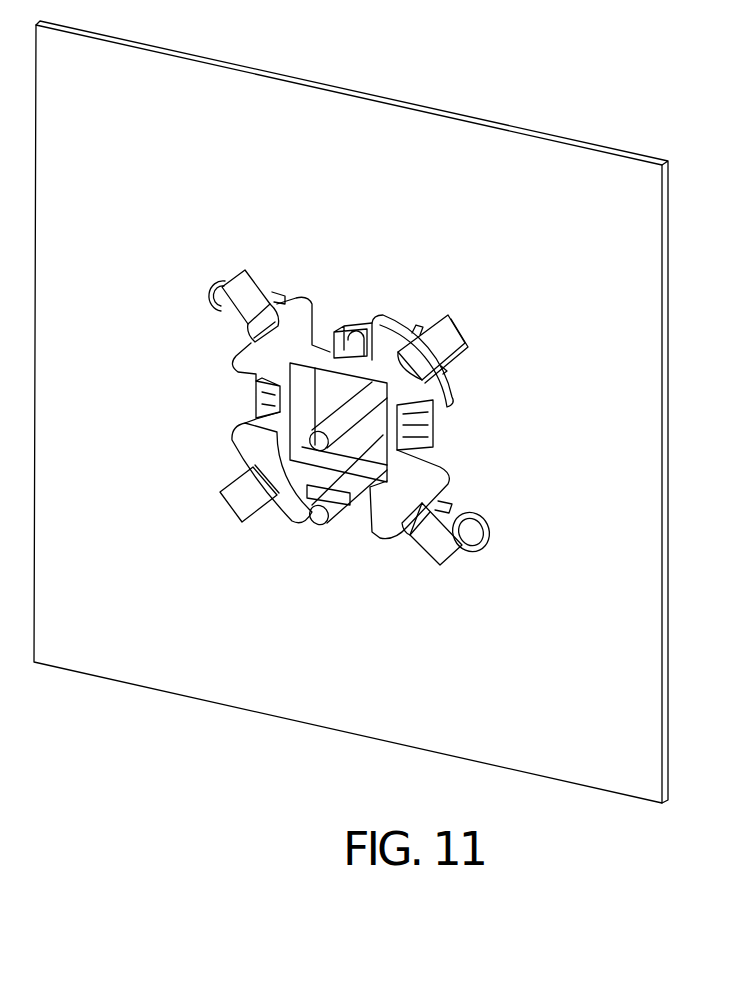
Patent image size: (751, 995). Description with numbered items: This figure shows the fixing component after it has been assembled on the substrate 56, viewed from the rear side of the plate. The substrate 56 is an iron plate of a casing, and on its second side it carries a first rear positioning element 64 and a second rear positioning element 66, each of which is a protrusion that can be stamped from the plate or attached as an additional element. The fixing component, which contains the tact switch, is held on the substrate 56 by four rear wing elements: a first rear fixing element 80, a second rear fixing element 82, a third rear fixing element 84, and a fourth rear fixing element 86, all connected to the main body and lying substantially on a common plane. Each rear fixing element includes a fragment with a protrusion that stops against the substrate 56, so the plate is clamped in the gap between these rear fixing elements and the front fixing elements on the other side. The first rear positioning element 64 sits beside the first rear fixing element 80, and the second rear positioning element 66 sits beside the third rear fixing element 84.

The substrate 56 is at (650, 268).
The first rear fixing element 80 is at (238, 288).
The first rear positioning element 64 is at (218, 307).
The fourth rear fixing element 86 is at (447, 338).
The second rear positioning element 66 is at (472, 527).
The third rear fixing element 84 is at (442, 547).
The second rear fixing element 82 is at (250, 503).